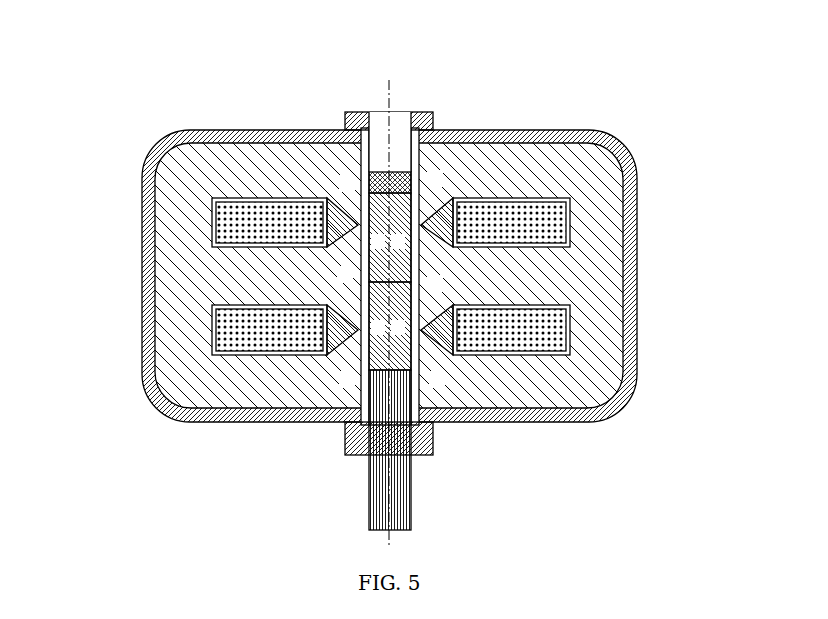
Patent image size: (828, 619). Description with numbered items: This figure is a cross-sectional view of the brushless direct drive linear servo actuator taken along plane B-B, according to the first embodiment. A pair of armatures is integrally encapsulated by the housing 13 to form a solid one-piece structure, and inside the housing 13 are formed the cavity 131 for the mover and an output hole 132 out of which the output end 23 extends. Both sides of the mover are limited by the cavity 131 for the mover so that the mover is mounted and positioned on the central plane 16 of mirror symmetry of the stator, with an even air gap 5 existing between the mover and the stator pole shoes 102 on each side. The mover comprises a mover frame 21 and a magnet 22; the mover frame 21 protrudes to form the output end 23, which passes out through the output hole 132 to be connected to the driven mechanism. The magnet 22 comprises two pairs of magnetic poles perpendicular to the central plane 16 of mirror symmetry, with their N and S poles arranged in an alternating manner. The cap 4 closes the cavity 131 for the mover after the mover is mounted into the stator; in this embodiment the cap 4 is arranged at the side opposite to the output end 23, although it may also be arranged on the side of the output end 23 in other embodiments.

The air gap 5 is at (535, 410).
The housing 13 is at (305, 130).
The stator pole shoes 102 is at (195, 137).
The cavity for the mover 131 is at (422, 203).
The mover frame 21 is at (412, 138).
The cap 4 is at (410, 113).
The output hole 132 is at (433, 455).
The magnet 22 is at (378, 375).
The output end 23 is at (368, 507).
The central plane of mirror symmetry 16 is at (385, 98).